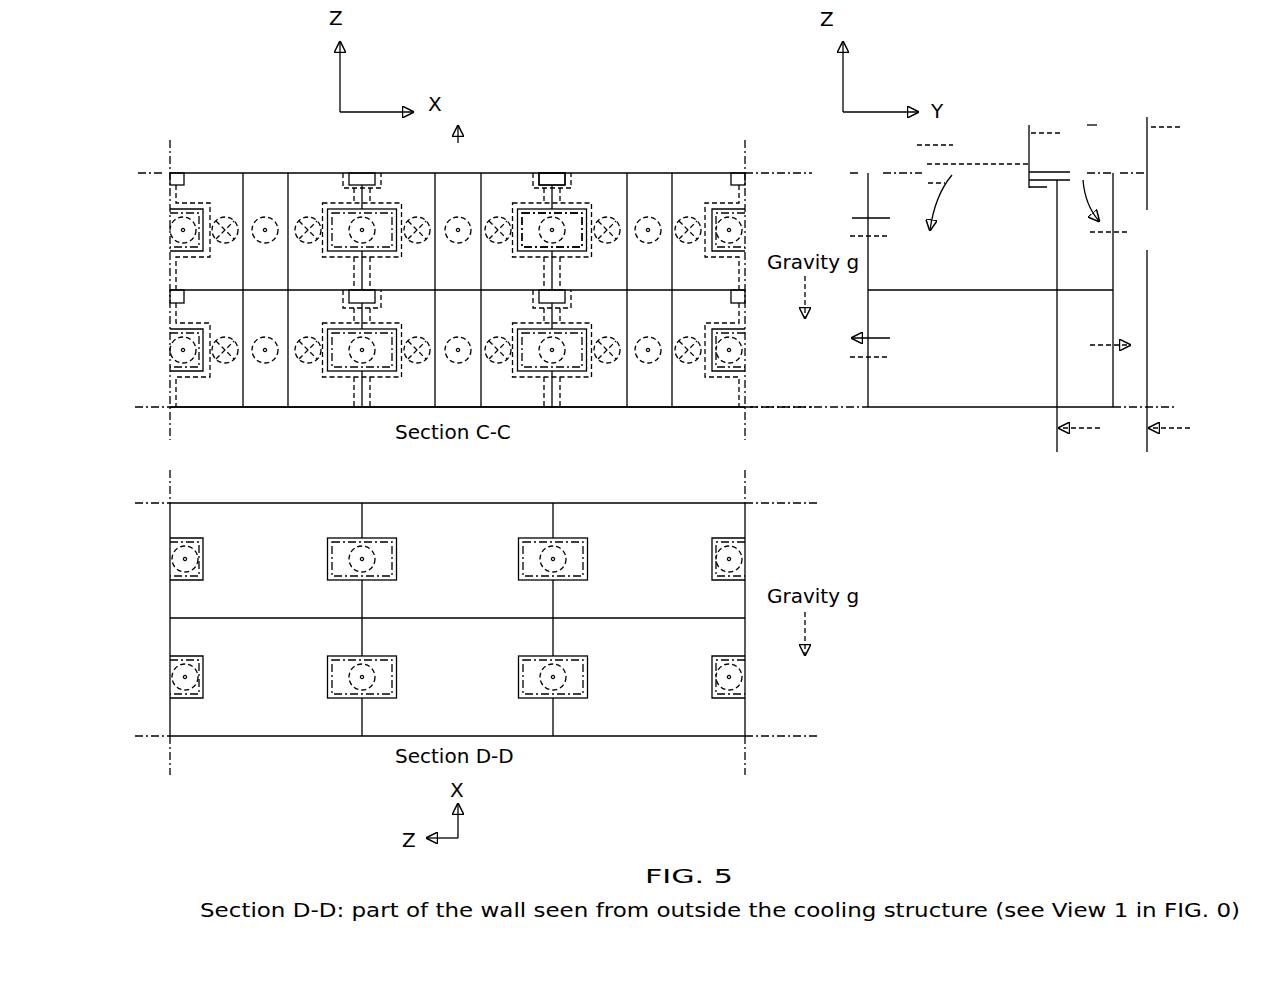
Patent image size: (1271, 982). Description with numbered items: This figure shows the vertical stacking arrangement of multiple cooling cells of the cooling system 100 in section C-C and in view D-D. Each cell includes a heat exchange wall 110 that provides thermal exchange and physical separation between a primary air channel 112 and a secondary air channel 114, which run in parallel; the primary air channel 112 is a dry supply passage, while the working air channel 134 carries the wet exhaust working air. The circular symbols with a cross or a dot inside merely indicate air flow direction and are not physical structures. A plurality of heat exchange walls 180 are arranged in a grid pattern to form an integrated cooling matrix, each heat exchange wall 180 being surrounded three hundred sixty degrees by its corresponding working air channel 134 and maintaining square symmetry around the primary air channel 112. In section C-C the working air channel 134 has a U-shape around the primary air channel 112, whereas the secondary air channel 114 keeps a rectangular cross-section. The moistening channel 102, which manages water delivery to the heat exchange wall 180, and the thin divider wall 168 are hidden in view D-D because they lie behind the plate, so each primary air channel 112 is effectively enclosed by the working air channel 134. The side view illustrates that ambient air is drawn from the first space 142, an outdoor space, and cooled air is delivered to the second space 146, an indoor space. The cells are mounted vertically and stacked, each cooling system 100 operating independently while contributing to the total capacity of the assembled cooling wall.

The cooling system 100 is at (397, 194).
The moistening channel 102 is at (342, 240).
The heat exchange wall 110 is at (281, 467).
The primary air channel 112 is at (498, 200).
The secondary air channel 114 is at (650, 410).
The working air channel 134 is at (574, 204).
The first space 142 is at (1162, 238).
The second space 146 is at (1178, 160).
The divider wall 168 is at (587, 191).
The heat exchange wall 180 is at (337, 205).